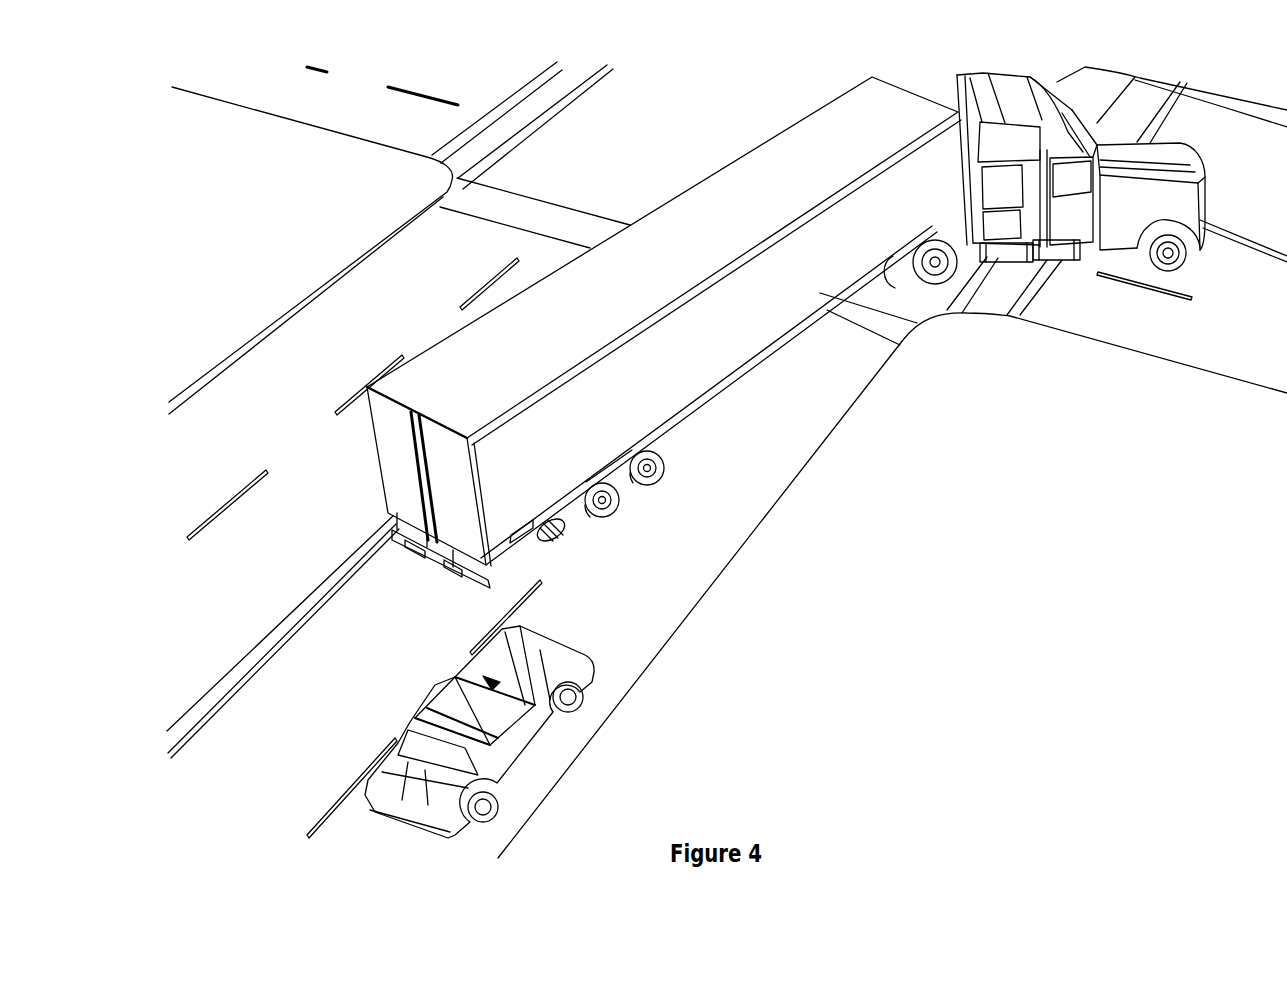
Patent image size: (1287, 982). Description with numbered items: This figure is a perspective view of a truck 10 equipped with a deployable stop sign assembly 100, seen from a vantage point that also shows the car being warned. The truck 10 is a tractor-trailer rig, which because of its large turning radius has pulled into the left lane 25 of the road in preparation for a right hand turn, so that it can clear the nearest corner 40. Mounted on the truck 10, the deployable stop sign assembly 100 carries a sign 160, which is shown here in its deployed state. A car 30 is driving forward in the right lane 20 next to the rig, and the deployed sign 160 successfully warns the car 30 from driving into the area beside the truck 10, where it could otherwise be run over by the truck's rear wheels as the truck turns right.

The truck 10 is at (642, 177).
The right lane 20 is at (618, 586).
The left lane 25 is at (392, 606).
The car 30 is at (580, 624).
The corner 40 is at (751, 539).
The deployable stop sign assembly 100 is at (528, 520).
The sign 160 is at (562, 530).